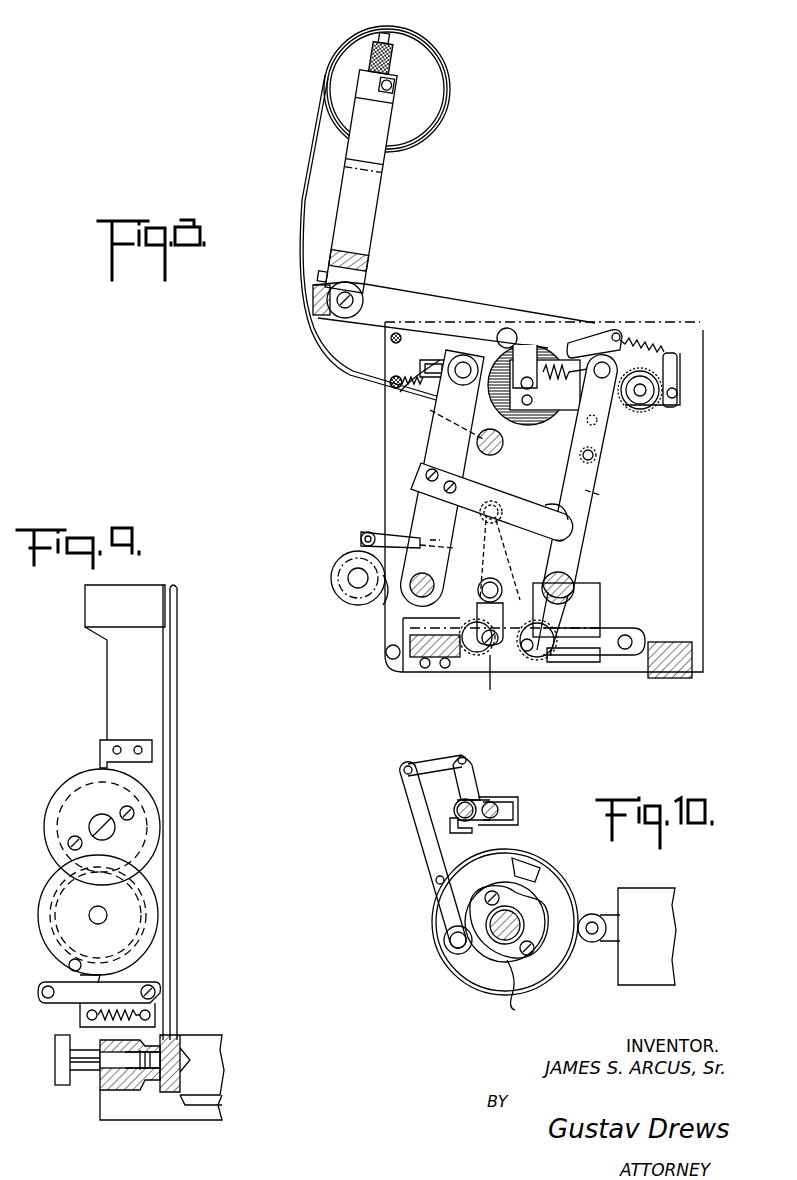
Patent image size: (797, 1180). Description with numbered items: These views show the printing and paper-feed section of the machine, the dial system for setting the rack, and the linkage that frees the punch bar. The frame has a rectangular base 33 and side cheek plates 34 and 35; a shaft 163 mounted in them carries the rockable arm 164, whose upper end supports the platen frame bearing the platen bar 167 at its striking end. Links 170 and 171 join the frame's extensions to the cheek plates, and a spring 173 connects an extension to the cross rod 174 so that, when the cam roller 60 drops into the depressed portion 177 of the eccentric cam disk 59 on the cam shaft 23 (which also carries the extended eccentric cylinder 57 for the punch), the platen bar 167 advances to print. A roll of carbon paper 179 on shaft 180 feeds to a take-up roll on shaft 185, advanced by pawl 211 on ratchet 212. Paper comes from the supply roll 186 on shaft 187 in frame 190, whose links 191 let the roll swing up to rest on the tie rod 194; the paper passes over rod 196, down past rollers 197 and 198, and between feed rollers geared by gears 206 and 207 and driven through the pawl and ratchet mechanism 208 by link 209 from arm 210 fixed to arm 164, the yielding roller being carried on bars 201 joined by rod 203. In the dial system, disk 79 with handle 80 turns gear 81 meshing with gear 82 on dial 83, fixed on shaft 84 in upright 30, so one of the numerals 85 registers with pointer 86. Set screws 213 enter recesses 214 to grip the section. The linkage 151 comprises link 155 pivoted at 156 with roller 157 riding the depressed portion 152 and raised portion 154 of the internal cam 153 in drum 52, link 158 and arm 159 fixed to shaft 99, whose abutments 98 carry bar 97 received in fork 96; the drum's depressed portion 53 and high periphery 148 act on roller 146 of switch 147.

In FIG. 8, the supply roll 186 is at (451, 88).
In FIG. 8, the shaft 187 is at (398, 85).
In FIG. 8, the frame 190 is at (385, 200).
In FIG. 8, the links 191 is at (420, 290).
In FIG. 8, the tie rod 194 is at (390, 339).
In FIG. 8, the cross rod 174 is at (392, 378).
In FIG. 8, the platen bar 167 is at (420, 355).
In FIG. 8, the spring 173 is at (410, 392).
In FIG. 8, the roll of carbon paper 179 is at (535, 350).
In FIG. 8, the shaft 180 is at (540, 388).
In FIG. 8, the pawl 211 is at (622, 336).
In FIG. 8, the shaft 185 is at (645, 395).
In FIG. 8, the ratchet 212 is at (638, 396).
In FIG. 8, the link 170 is at (585, 503).
In FIG. 8, the arm 164 is at (440, 438).
In FIG. 8, the rod 196 is at (505, 440).
In FIG. 8, the arm 210 is at (512, 495).
In FIG. 8, the link 171 is at (555, 507).
In FIG. 8, the roller 197 is at (480, 513).
In FIG. 8, the link 209 is at (566, 541).
In FIG. 8, the depressed portion 177 is at (418, 588).
In FIG. 8, the roller 198 is at (486, 583).
In FIG. 8, the shaft 163 is at (405, 620).
In FIG. 8, the gear 206 is at (478, 655).
In FIG. 8, the pawl and ratchet mechanism 208 is at (491, 682).
In FIG. 8, the gear 207 is at (545, 655).
In FIG. 8, the bars 201 is at (610, 628).
In FIG. 8, the rod 203 is at (632, 638).
In FIG. 8, the rectangular base 33 is at (683, 645).
In FIG. 8, the cheek plate 35 is at (703, 505).
In FIG. 8, the cam roller 60 is at (368, 532).
In FIG. 8, the eccentric cam disk 59 is at (345, 556).
In FIG. 8, the extended eccentric cylinder 57 is at (338, 596).
In FIG. 8, the cam shaft 23 is at (355, 590).
In FIG. 9, the upright 30 is at (115, 668).
In FIG. 9, the cheek plate 34 is at (178, 665).
In FIG. 9, the pointer 86 is at (100, 750).
In FIG. 9, the shaft 84 is at (95, 818).
In FIG. 9, the numerals 85 is at (152, 828).
In FIG. 9, the dial 83 is at (45, 814).
In FIG. 9, the gear 82 is at (52, 858).
In FIG. 9, the gear 81 is at (52, 905).
In FIG. 9, the disk 79 is at (40, 935).
In FIG. 9, the handle 80 is at (68, 965).
In FIG. 9, the recesses 214 is at (172, 1060).
In FIG. 9, the set screws 213 is at (82, 1067).
In FIG. 10, the link 158 is at (428, 762).
In FIG. 10, the arm 159 is at (470, 785).
In FIG. 10, the bar 97 is at (494, 804).
In FIG. 10, the shaft 99 is at (524, 923).
In FIG. 10, the fork 96 is at (518, 810).
In FIG. 10, the linkage 151 is at (407, 820).
In FIG. 10, the high periphery 148 is at (535, 856).
In FIG. 10, the link 155 is at (425, 852).
In FIG. 10, the depressed portion 152 is at (535, 905).
In FIG. 10, the pivot 156 is at (435, 881).
In FIG. 10, the depressed portion 53 is at (576, 916).
In FIG. 10, the switch 147 is at (665, 920).
In FIG. 10, the roller 146 is at (592, 942).
In FIG. 10, the roller 157 is at (455, 955).
In FIG. 10, the drum 52 is at (558, 975).
In FIG. 10, the internal cam 153 is at (480, 962).
In FIG. 10, the raised portion 154 is at (527, 991).
In FIG. 10, the abutments 98 is at (470, 826).